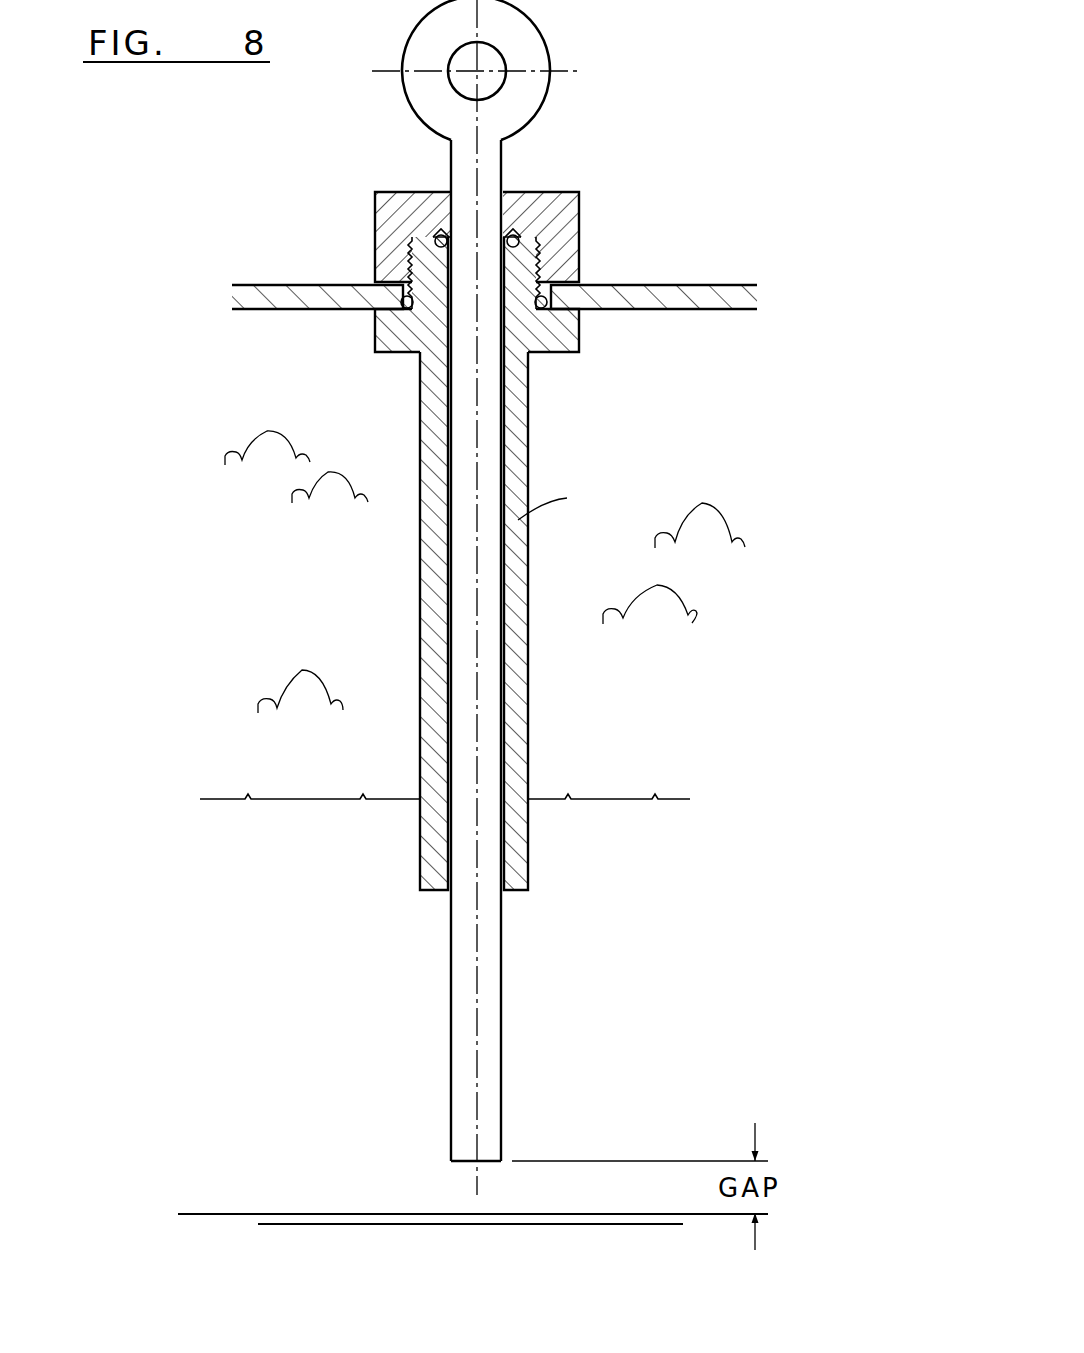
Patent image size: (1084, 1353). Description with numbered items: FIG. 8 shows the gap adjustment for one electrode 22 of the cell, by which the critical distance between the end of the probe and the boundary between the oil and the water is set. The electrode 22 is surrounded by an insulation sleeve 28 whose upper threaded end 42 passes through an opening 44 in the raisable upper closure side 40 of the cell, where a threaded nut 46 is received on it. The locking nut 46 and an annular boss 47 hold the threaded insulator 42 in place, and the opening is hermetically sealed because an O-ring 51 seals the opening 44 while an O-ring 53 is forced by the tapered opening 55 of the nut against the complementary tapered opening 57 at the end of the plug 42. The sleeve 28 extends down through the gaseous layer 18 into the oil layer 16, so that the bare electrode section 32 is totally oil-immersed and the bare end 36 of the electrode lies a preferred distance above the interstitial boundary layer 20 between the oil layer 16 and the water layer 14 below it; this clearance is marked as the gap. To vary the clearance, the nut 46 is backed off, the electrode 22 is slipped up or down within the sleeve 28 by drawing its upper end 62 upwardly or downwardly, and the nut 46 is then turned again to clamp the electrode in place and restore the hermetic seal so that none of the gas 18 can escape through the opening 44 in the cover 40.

The electrode 22 is at (405, 30).
The upper end of the electrode 62 is at (541, 34).
The tapered opening 55 is at (443, 230).
The threaded nut 46 is at (558, 192).
The threaded end of the insulator 42 is at (537, 252).
The O-ring 53 is at (438, 236).
The complementary tapered opening 57 is at (411, 255).
The upper closure side 40 is at (700, 284).
The opening 44 is at (405, 294).
The annular boss 47 is at (373, 330).
The O-ring 51 is at (538, 308).
The gaseous layer 18 is at (260, 595).
The insulation sleeve 28 is at (538, 703).
The oil layer 16 is at (260, 995).
The bare electrode section 32 is at (500, 1027).
The bare end of the electrode 36 is at (484, 1165).
The interstitial boundary layer 20 is at (378, 1218).
The water layer 14 is at (455, 1290).